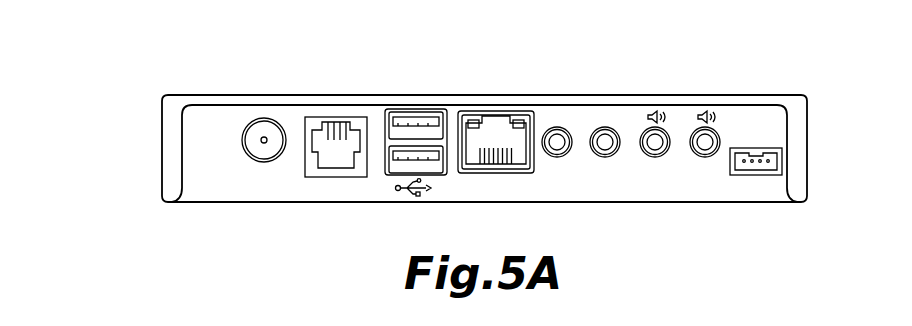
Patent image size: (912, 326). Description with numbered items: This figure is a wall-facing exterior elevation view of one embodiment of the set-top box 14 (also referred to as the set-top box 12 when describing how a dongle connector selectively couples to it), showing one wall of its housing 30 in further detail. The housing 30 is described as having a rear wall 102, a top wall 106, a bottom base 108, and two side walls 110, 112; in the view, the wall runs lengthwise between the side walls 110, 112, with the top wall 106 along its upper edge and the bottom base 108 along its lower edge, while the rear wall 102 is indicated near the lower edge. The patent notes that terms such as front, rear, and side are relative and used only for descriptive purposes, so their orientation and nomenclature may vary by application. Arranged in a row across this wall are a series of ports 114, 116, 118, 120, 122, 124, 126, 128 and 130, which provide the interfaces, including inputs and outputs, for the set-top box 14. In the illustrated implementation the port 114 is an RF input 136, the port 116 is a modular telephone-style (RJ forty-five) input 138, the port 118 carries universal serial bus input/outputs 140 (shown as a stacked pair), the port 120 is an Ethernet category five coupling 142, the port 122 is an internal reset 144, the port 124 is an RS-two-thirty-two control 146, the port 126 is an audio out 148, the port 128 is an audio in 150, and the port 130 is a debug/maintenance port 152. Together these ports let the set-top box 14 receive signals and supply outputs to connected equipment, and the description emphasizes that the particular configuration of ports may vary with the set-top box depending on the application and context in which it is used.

The set-top box 12 is at (165, 90).
The set-top box 14 is at (190, 190).
The housing 30 is at (789, 90).
The rear wall 102 is at (230, 201).
The top wall 106 is at (233, 95).
The bottom base 108 is at (356, 203).
The side wall 110 is at (807, 140).
The side wall 112 is at (161, 141).
The port 114 is at (266, 118).
The port 116 is at (336, 121).
The port 118 is at (418, 112).
The port 120 is at (499, 114).
The port 122 is at (560, 127).
The port 124 is at (608, 128).
The port 126 is at (657, 110).
The port 128 is at (706, 110).
The port 130 is at (782, 167).
The RF input 136 is at (262, 162).
The RJ-45 input 138 is at (314, 178).
The universal serial bus (USB) input/outputs 140 is at (407, 174).
The Ethernet category 5 (Cat 5) coupling 142 is at (497, 174).
The internal reset 144 is at (557, 158).
The RS232 control 146 is at (606, 158).
The audio out 148 is at (655, 158).
The audio in 150 is at (707, 158).
The debug/maintenance port 152 is at (756, 176).